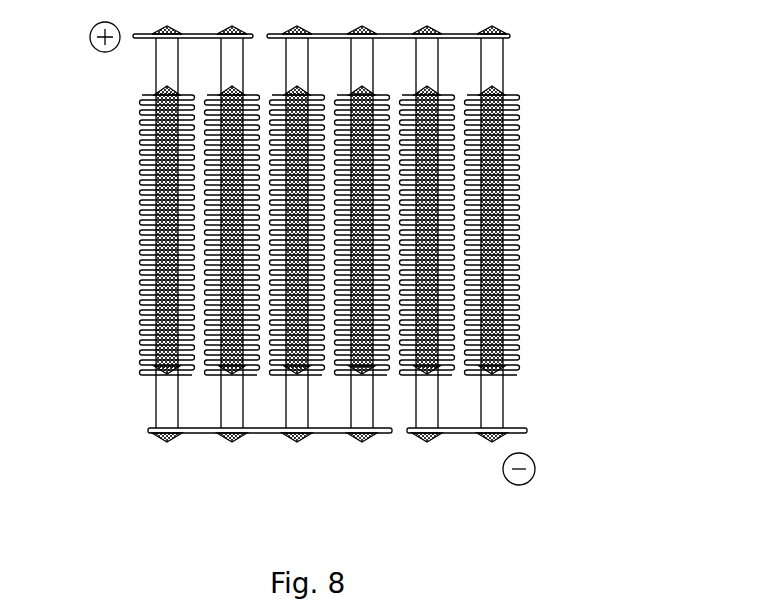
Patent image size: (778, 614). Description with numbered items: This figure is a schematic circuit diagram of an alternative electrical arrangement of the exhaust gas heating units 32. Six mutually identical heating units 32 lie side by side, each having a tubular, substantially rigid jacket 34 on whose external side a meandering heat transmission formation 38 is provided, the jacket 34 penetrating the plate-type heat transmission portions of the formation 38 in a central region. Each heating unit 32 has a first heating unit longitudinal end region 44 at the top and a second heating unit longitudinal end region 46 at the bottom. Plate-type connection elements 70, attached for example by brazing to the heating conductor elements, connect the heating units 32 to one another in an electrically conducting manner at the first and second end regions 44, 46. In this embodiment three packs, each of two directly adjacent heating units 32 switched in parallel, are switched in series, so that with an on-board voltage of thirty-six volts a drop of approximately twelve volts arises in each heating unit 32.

The heating unit 32 is at (158, 368).
The jacket 34 is at (493, 412).
The heat transmission formation 38 is at (524, 271).
The first heating unit longitudinal end region 44 is at (517, 50).
The second heating unit longitudinal end region 46 is at (323, 289).
The connection element 70 is at (200, 37).